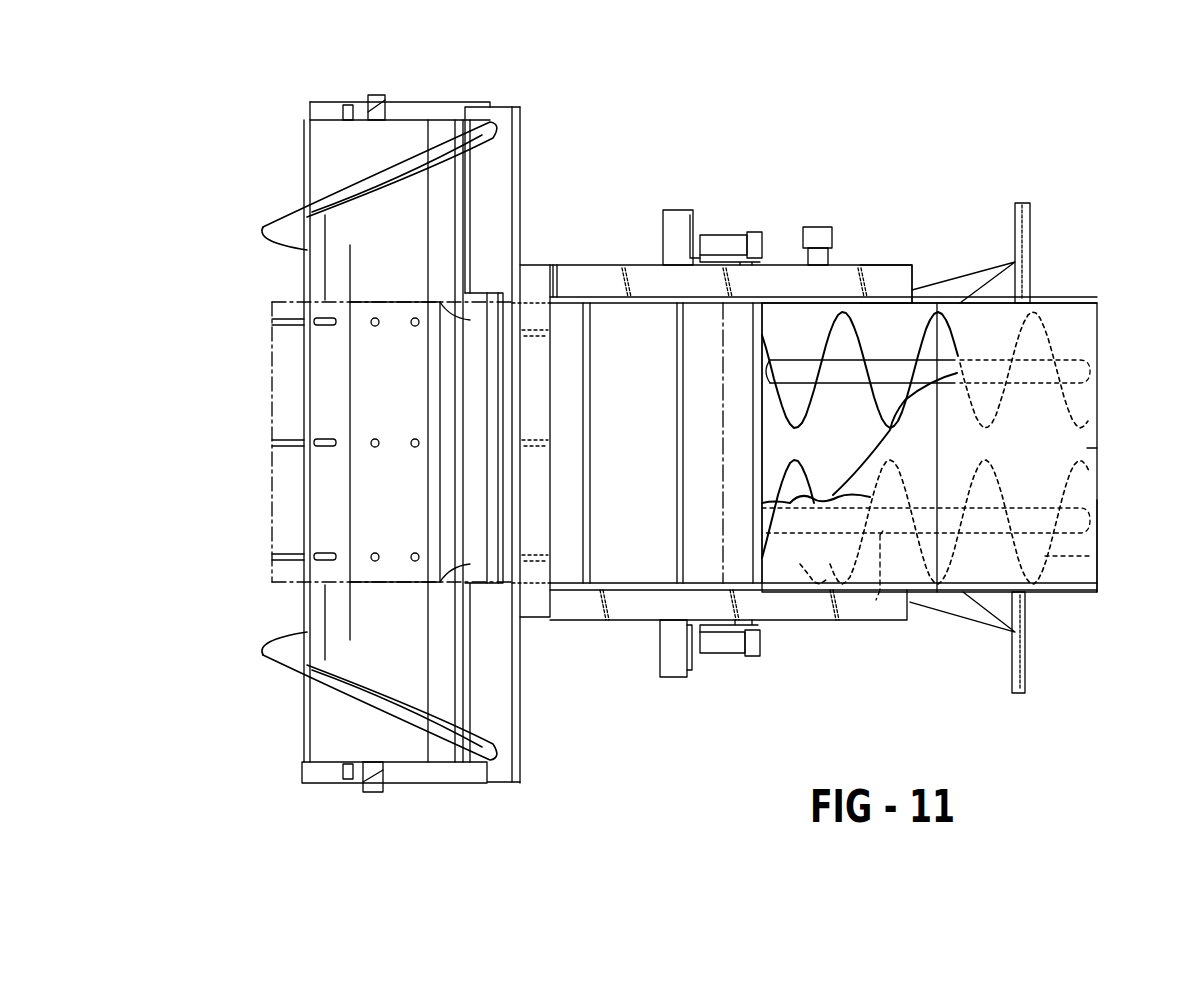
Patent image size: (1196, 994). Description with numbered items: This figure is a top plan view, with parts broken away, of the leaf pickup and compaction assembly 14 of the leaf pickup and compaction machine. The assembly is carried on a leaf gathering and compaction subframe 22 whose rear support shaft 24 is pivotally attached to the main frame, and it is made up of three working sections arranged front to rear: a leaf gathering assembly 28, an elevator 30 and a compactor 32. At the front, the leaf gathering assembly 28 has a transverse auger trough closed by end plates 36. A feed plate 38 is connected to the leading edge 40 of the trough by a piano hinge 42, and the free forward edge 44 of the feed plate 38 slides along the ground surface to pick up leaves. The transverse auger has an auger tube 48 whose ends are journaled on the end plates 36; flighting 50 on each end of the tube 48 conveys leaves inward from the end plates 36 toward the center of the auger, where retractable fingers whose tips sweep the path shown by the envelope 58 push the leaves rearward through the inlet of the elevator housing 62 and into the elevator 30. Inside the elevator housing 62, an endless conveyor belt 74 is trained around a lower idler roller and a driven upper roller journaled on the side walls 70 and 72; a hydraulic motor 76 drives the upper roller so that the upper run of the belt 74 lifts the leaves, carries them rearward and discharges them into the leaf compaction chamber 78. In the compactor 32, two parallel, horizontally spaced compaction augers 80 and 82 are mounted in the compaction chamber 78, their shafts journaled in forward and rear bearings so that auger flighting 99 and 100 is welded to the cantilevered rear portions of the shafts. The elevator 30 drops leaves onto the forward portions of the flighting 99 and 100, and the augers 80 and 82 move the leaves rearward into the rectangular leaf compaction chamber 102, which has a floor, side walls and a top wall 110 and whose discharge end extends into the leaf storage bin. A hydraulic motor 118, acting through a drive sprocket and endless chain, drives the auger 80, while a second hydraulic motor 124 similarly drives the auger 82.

The leaf pickup and compaction assembly 14 is at (663, 250).
The leaf gathering and compaction subframe 22 is at (897, 273).
The rear support shaft 24 is at (1030, 232).
The leaf gathering assembly 28 is at (556, 128).
The elevator 30 is at (636, 656).
The compactor 32 is at (1100, 605).
The end plates 36 is at (455, 102).
The feed plate 38 is at (306, 107).
The leading edge 40 is at (345, 110).
The piano hinge 42 is at (377, 95).
The free forward edge 44 is at (306, 122).
The auger tube 48 is at (305, 282).
The flighting 50 is at (266, 225).
The envelope 58 is at (270, 520).
The elevator housing 62 is at (532, 265).
The side wall 70 is at (572, 590).
The side wall 72 is at (590, 297).
The endless conveyor belt 74 is at (652, 330).
The hydraulic motor 76 is at (830, 227).
The leaf compaction chamber 78 is at (987, 585).
The compaction auger 80 is at (880, 600).
The compaction auger 82 is at (799, 350).
The auger flighting 99 is at (1045, 556).
The auger flighting 100 is at (1062, 328).
The rectangular leaf compaction chamber 102 is at (1065, 303).
The top wall 110 is at (1097, 448).
The hydraulic motor 118 is at (728, 653).
The hydraulic motor 124 is at (752, 232).